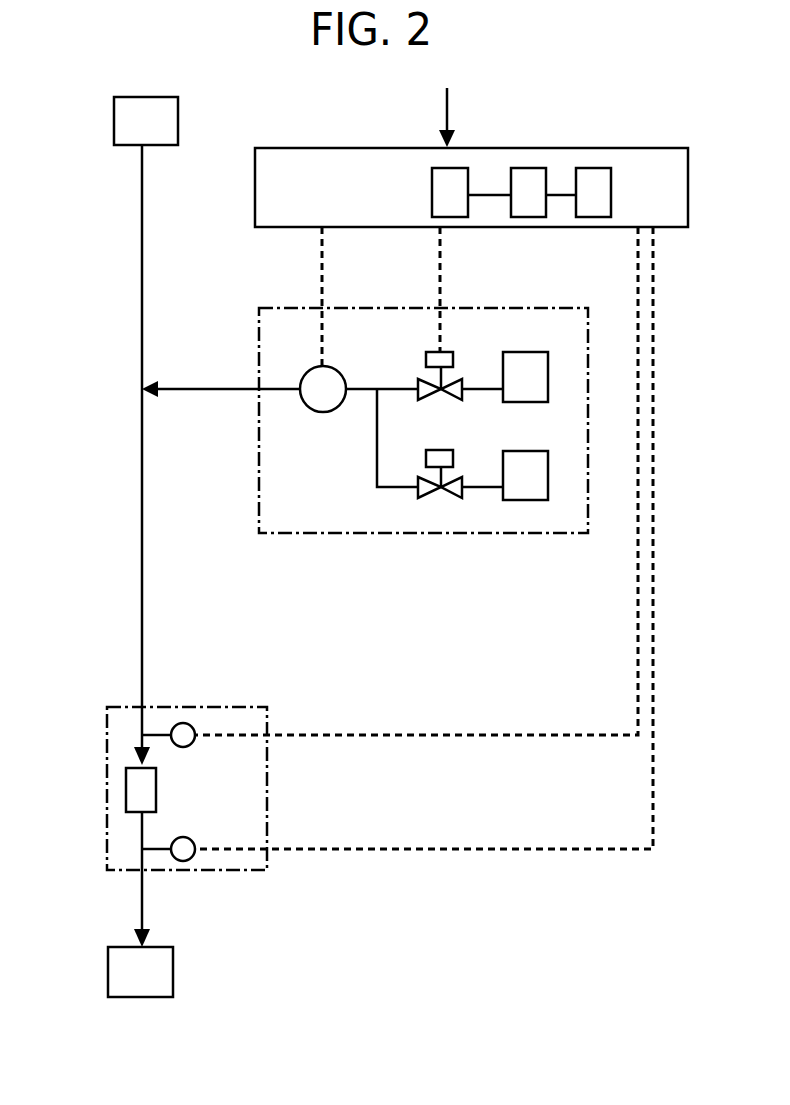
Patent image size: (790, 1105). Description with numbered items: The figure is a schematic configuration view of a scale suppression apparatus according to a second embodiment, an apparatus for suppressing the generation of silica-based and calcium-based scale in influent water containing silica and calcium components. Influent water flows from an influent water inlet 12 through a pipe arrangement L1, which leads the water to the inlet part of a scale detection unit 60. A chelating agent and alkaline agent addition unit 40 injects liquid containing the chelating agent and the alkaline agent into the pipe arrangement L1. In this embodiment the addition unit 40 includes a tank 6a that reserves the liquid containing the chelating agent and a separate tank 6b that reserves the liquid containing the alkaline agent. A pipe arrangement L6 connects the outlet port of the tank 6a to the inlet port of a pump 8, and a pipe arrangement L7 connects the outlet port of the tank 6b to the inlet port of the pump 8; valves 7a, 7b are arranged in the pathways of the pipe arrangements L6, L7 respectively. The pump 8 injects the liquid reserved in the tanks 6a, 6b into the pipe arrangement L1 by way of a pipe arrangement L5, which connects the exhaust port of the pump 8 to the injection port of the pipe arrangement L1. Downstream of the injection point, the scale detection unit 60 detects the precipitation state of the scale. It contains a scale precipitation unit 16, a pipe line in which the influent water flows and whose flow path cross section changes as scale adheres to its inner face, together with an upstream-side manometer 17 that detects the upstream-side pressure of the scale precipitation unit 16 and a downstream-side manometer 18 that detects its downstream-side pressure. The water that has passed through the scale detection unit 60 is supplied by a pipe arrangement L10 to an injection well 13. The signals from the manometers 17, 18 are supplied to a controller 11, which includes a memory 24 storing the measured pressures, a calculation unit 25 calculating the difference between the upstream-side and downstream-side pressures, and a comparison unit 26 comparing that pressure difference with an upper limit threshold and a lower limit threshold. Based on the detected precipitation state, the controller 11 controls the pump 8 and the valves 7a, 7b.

The controller 11 is at (397, 147).
The influent water inlet 12 is at (178, 123).
The injection well 13 is at (173, 977).
The scale precipitation unit 16 is at (156, 790).
The upstream-side manometer 17 is at (192, 745).
The downstream-side manometer 18 is at (192, 838).
The memory 24 is at (465, 168).
The calculation unit 25 is at (536, 168).
The comparison unit 26 is at (590, 168).
The chelating agent and alkaline agent addition unit 40 is at (458, 307).
The pump 8 is at (341, 371).
The valve 7a is at (447, 352).
The valve 7b is at (443, 450).
The tank 6a is at (532, 353).
The tank 6b is at (523, 450).
The scale detection unit 60 is at (107, 762).
The pipe arrangement L1 is at (142, 233).
The pipe arrangement L5 is at (275, 385).
The pipe arrangement L6 is at (480, 387).
The pipe arrangement L7 is at (467, 490).
The pipe arrangement L10 is at (141, 890).